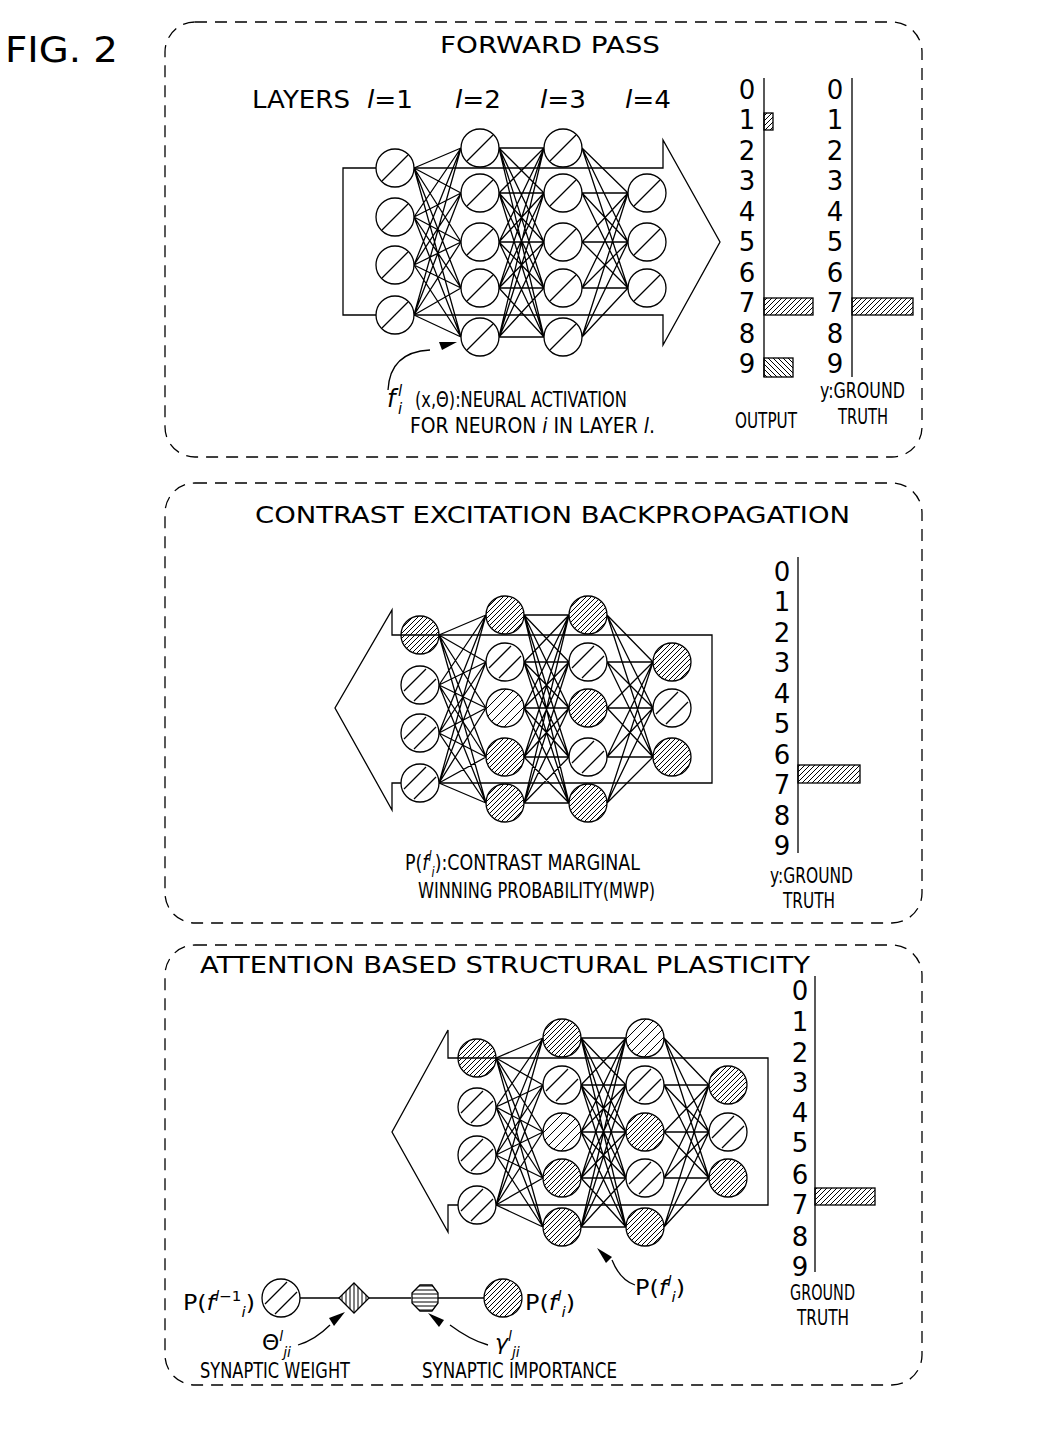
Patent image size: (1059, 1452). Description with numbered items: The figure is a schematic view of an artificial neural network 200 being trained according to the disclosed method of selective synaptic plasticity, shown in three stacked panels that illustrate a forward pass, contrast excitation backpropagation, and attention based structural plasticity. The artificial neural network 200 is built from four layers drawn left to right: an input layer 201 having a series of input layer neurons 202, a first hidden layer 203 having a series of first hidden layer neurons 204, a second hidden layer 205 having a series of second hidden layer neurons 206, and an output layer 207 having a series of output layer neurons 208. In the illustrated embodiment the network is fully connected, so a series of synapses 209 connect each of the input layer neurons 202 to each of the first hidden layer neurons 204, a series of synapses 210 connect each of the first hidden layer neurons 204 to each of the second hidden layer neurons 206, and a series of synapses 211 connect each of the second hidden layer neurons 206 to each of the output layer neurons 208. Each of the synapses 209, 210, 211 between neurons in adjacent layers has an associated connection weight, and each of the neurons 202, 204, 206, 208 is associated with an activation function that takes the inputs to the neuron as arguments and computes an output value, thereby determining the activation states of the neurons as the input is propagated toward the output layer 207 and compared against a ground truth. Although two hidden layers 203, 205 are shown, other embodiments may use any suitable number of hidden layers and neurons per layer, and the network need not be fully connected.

The artificial neural network 200 is at (288, 380).
The input layer 201 is at (360, 372).
The input layer neurons 202 is at (400, 315).
The first hidden layer 203 is at (446, 118).
The first hidden layer neurons 204 is at (475, 158).
The second hidden layer 205 is at (600, 115).
The second hidden layer neurons 206 is at (566, 138).
The output layer 207 is at (695, 122).
The output layer neurons 208 is at (655, 195).
The synapses 209 is at (470, 812).
The synapses 210 is at (528, 334).
The synapses 211 is at (623, 293).